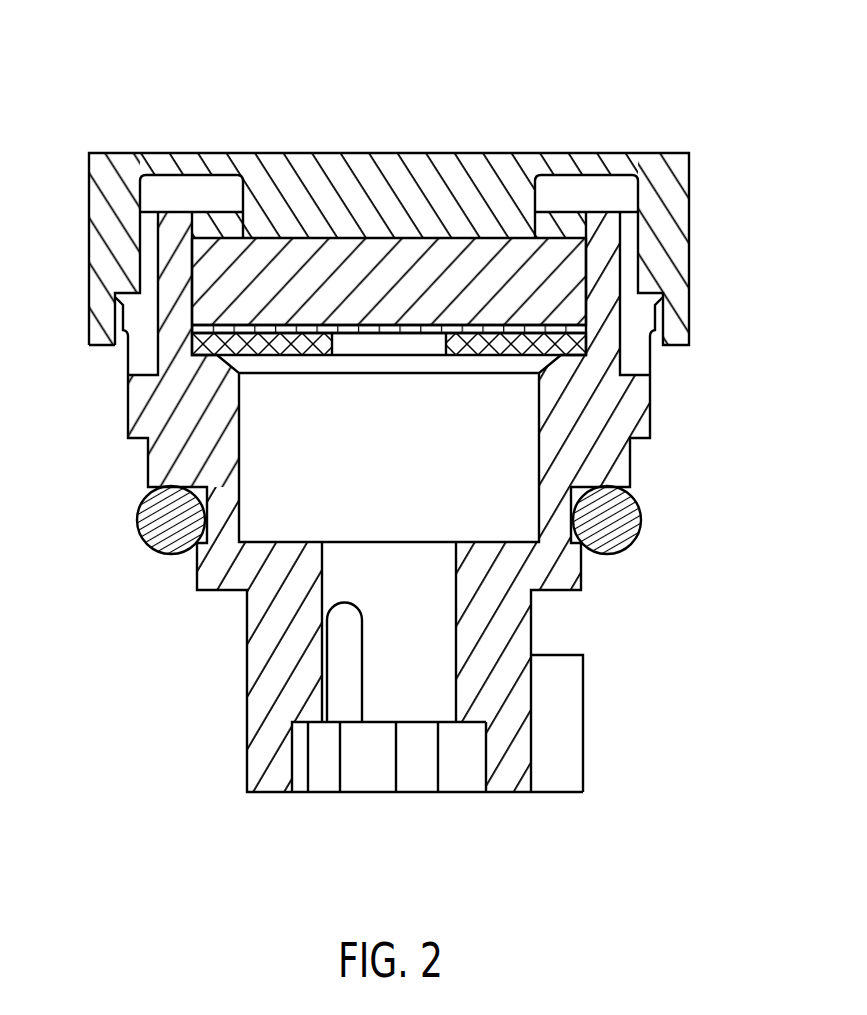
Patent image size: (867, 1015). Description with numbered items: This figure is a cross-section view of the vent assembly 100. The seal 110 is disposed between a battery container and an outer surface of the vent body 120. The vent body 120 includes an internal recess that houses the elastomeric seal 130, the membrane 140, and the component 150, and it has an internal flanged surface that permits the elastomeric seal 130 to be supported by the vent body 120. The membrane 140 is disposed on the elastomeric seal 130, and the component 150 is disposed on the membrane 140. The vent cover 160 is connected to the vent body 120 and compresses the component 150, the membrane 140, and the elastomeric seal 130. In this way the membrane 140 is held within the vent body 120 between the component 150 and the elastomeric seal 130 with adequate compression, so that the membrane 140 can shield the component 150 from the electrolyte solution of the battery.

The vent assembly 100 is at (436, 400).
The seal 110 is at (649, 520).
The vent body 120 is at (537, 620).
The elastomeric seal 130 is at (595, 345).
The membrane 140 is at (595, 328).
The component 150 is at (595, 280).
The vent cover 160 is at (659, 151).